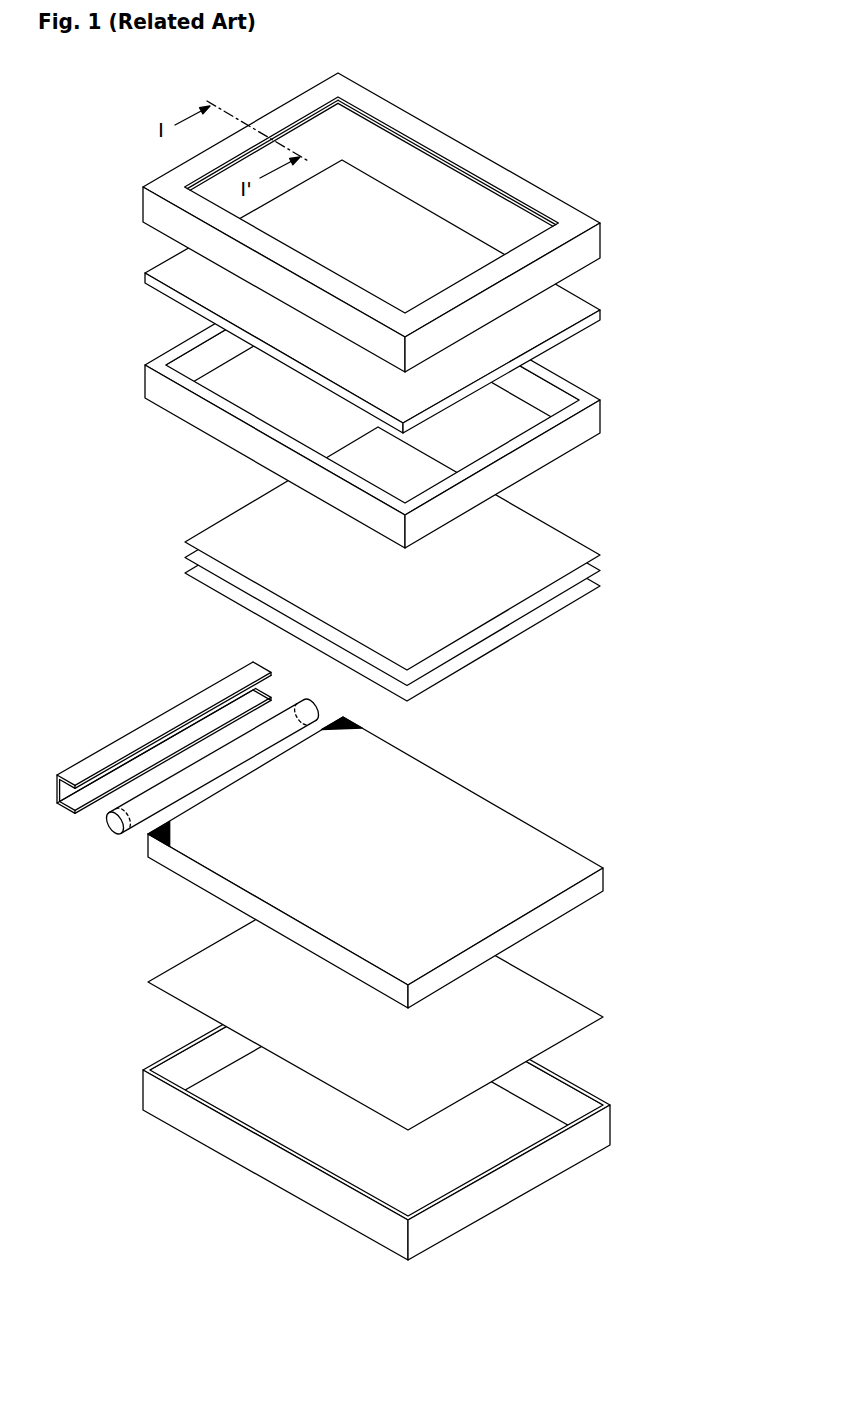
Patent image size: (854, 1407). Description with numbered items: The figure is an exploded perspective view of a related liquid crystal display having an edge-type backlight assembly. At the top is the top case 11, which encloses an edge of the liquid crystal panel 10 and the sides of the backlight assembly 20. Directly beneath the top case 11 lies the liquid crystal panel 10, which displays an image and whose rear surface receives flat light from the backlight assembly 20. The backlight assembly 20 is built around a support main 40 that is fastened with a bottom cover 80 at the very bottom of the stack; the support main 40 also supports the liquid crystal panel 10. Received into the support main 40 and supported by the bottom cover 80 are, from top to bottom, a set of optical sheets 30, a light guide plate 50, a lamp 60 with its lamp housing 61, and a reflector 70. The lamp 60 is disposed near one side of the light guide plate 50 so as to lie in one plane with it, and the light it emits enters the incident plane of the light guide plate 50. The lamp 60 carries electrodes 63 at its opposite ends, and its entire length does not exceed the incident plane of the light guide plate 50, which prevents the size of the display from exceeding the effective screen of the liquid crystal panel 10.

The liquid crystal panel 10 is at (580, 311).
The top case 11 is at (566, 222).
The backlight assembly 20 is at (419, 755).
The optical sheets 30 is at (617, 553).
The support main 40 is at (421, 399).
The light guide plate 50 is at (582, 867).
The lamp 60 is at (183, 782).
The lamp housing 61 is at (98, 762).
The electrodes 63 is at (307, 698).
The reflector 70 is at (538, 1013).
The bottom cover 80 is at (588, 1082).